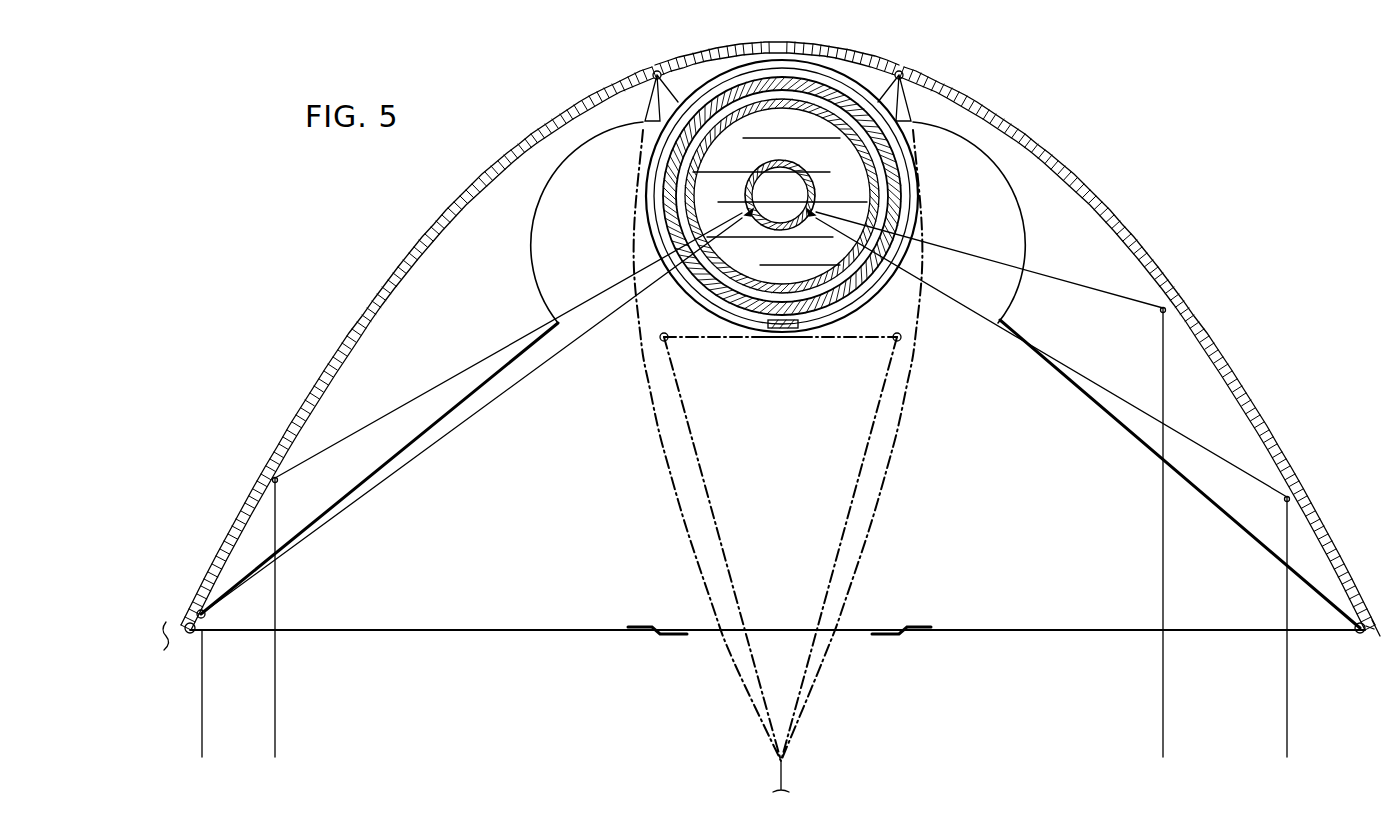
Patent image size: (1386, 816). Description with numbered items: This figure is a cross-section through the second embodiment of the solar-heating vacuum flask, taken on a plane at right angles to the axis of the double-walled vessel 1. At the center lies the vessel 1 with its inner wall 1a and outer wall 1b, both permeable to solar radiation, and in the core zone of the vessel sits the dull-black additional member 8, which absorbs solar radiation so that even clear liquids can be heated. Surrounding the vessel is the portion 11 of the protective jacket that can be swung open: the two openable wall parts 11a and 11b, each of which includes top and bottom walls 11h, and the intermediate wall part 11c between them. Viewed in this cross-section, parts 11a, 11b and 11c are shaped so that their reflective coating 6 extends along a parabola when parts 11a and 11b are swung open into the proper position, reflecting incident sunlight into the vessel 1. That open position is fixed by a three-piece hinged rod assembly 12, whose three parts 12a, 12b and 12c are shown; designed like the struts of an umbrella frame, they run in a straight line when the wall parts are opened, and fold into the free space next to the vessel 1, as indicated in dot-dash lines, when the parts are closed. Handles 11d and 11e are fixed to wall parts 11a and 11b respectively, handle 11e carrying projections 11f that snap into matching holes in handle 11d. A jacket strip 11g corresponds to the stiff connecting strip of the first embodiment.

The double-walled vessel 1 is at (872, 278).
The inner wall 1a is at (773, 288).
The outer wall 1b is at (782, 328).
The reflective coating 6 is at (778, 330).
The additional member 8 is at (776, 167).
The protective jacket portion 11 is at (778, 330).
The openable wall part 11a is at (347, 332).
The openable wall part 11b is at (1027, 142).
The intermediate wall part 11c is at (787, 47).
The handle 11d is at (177, 623).
The handle 11e is at (1377, 627).
The projections 11f is at (1365, 640).
The jacket strip 11g is at (770, 341).
The top and bottom walls 11h is at (415, 426).
The hinged rod assembly 12 is at (437, 630).
The rod assembly part 12a is at (594, 635).
The rod assembly part 12b is at (954, 635).
The rod assembly part 12c is at (850, 343).